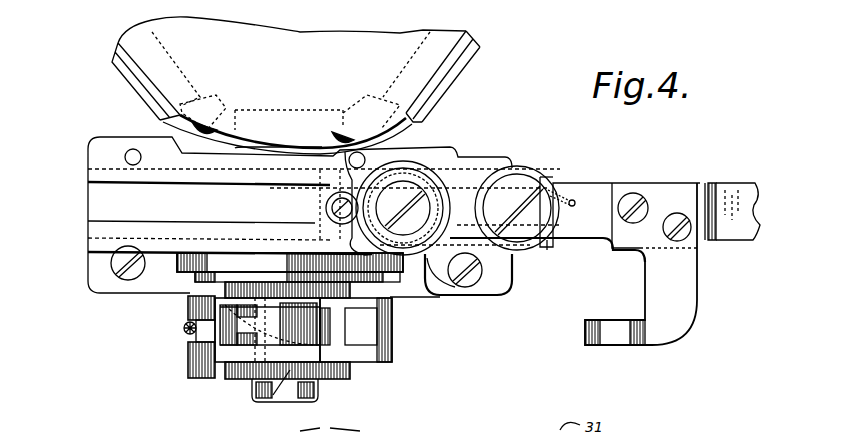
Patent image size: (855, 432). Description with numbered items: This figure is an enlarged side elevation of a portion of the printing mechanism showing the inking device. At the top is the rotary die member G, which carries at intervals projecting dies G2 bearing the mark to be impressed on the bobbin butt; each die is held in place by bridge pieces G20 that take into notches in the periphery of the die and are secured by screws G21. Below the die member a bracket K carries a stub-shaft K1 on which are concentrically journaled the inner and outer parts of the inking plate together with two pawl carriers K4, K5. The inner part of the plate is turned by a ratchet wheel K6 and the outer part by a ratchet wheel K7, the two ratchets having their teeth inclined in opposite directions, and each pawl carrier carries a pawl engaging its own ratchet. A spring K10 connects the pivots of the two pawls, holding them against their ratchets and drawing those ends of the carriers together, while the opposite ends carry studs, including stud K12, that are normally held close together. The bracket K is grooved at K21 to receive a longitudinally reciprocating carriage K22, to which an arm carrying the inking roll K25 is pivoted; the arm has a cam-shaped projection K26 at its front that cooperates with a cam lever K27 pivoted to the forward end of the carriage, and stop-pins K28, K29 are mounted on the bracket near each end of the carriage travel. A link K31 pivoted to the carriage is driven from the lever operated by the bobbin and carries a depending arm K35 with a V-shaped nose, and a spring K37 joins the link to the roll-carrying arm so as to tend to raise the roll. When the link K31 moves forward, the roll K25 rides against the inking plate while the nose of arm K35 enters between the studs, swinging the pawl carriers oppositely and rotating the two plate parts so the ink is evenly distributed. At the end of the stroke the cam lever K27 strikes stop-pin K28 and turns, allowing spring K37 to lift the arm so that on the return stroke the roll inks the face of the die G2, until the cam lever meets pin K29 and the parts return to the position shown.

The rotary die member G is at (400, 33).
The projecting die G2 is at (292, 118).
The bridge piece G20 is at (395, 128).
The screw G21 is at (420, 133).
The bracket K is at (103, 279).
The stub-shaft K1 is at (273, 395).
The pawl carrier K4 is at (257, 385).
The pawl carrier K5 is at (330, 347).
The ratchet wheel K6 is at (347, 380).
The ratchet wheel K7 is at (400, 300).
The spring K10 is at (183, 328).
The stud K12 is at (392, 333).
The groove K21 is at (103, 198).
The carriage K22 is at (548, 240).
The inking roll K25 is at (497, 298).
The cam-shaped projection K26 is at (325, 242).
The cam lever K27 is at (342, 162).
The stop-pin K28 is at (130, 152).
The stop-pin K29 is at (457, 147).
The link K31 is at (748, 230).
The depending arm K35 is at (700, 338).
The spring K37 is at (540, 165).